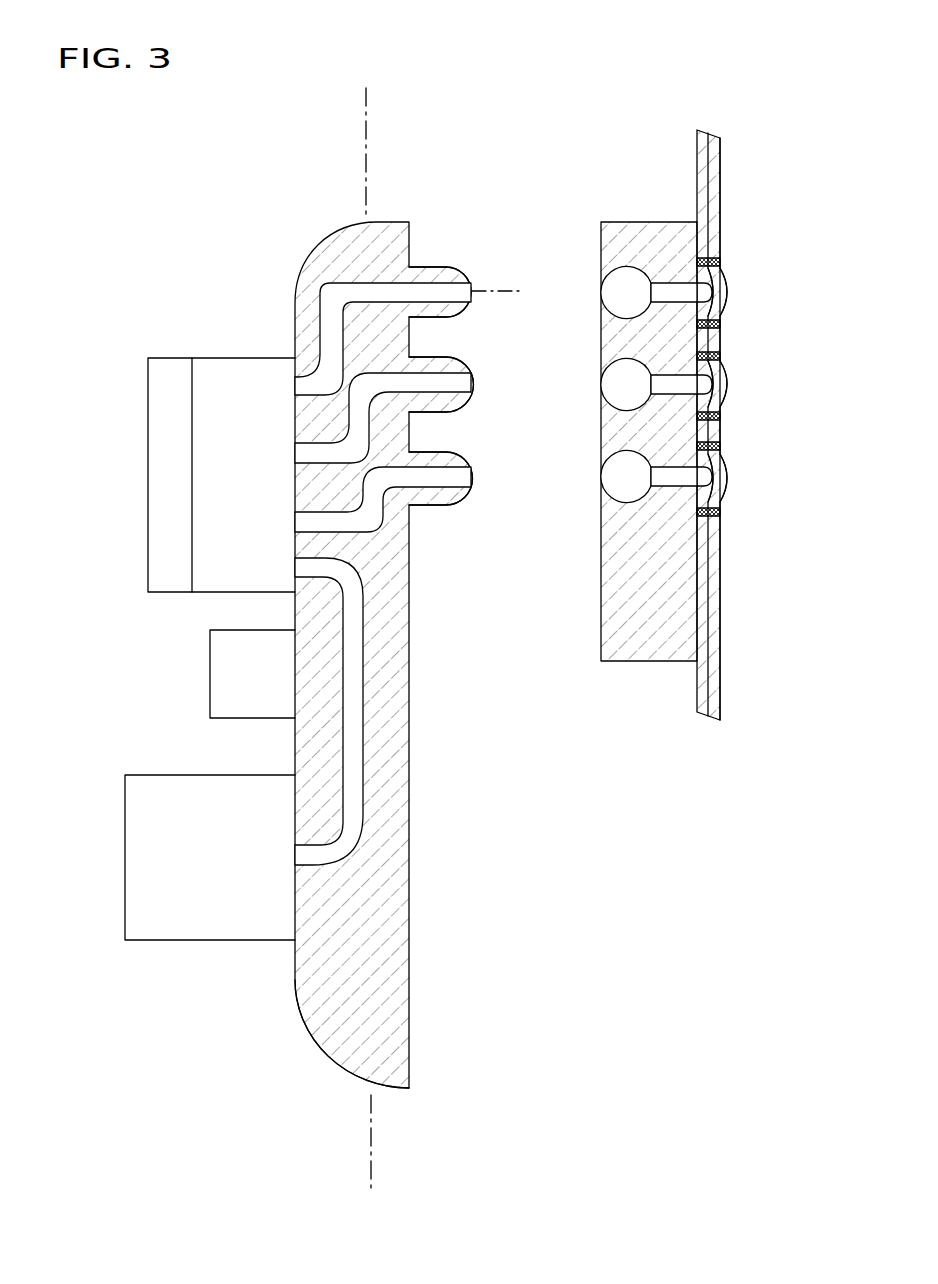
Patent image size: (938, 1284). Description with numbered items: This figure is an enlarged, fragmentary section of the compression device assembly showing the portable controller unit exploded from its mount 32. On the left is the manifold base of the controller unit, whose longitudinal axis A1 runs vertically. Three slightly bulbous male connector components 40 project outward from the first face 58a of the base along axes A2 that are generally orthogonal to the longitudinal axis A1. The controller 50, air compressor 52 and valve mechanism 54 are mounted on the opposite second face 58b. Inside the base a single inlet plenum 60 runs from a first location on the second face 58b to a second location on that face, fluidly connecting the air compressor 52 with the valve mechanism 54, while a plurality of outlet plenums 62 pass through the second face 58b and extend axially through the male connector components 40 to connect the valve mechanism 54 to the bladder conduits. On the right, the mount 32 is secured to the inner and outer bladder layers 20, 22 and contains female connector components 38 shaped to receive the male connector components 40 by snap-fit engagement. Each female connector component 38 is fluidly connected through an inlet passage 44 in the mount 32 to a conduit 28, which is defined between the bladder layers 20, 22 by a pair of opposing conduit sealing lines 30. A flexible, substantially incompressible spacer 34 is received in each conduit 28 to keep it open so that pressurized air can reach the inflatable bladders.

The inner bladder layer 20 is at (697, 698).
The outer bladder layer 22 is at (720, 690).
The conduit 28 is at (716, 293).
The conduit sealing line 30 is at (722, 262).
The mount 32 is at (645, 662).
The spacer 34 is at (727, 280).
The female connector component 38 is at (680, 475).
The male connector component 40 is at (463, 314).
The inlet passage 44 is at (655, 378).
The controller 50 is at (209, 678).
The air compressor 52 is at (124, 851).
The valve mechanism 54 is at (147, 487).
The first face 58a is at (410, 963).
The second face 58b is at (294, 978).
The inlet plenum 60 is at (352, 698).
The outlet plenum 62 is at (396, 382).
The longitudinal axis of the base A1 is at (364, 112).
The axis of the connection component A2 is at (510, 291).